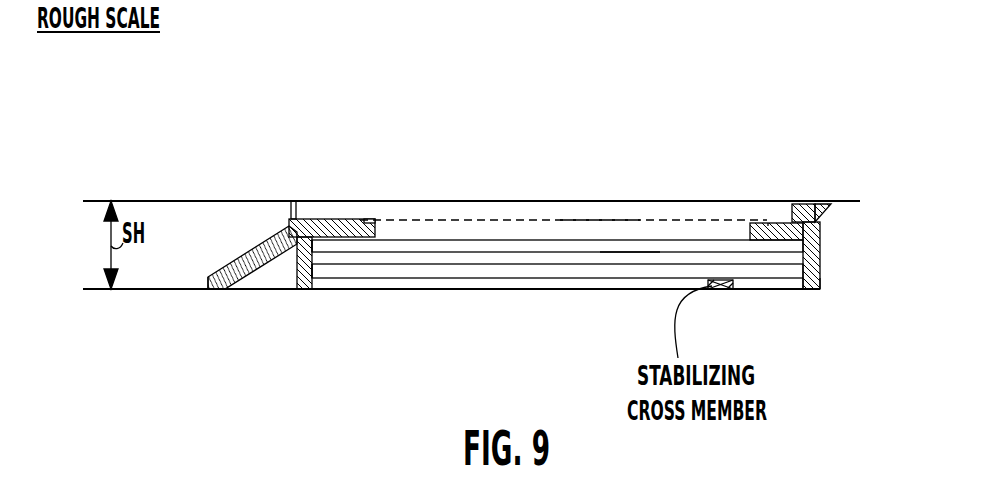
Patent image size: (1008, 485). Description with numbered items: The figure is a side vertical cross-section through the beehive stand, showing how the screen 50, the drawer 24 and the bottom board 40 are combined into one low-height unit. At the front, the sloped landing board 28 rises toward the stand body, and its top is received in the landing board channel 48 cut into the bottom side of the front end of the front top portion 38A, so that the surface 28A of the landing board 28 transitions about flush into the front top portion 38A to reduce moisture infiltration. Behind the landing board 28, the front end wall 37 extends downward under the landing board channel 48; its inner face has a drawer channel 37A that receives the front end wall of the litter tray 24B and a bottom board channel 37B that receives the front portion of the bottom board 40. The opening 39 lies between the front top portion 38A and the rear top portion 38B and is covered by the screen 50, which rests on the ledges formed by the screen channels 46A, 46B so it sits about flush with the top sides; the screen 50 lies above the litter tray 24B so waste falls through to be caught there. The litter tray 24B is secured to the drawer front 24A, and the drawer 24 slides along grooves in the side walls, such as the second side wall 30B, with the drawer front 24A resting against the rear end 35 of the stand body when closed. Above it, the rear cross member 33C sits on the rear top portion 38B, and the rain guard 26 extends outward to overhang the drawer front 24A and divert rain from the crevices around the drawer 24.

The landing board channel 48 is at (313, 219).
The front top portion 38A is at (337, 219).
The screen channel 46A is at (371, 220).
The screen 50 is at (466, 220).
The second side wall 30B is at (602, 220).
The litter tray 24B is at (527, 240).
The opening 39 is at (628, 242).
The bottom board 40 is at (628, 268).
The drawer channel 37A is at (312, 245).
The bottom board channel 37B is at (310, 272).
The front end wall 37 is at (293, 258).
The surface of the landing board 28A is at (262, 263).
The landing board 28 is at (212, 266).
The rear top portion 38B is at (762, 222).
The screen channel 46B is at (769, 222).
The rear cross member 33C is at (800, 205).
The rain guard 26 is at (822, 206).
The rear end 35 is at (821, 241).
The drawer front 24A is at (803, 283).
The drawer 24 is at (820, 280).